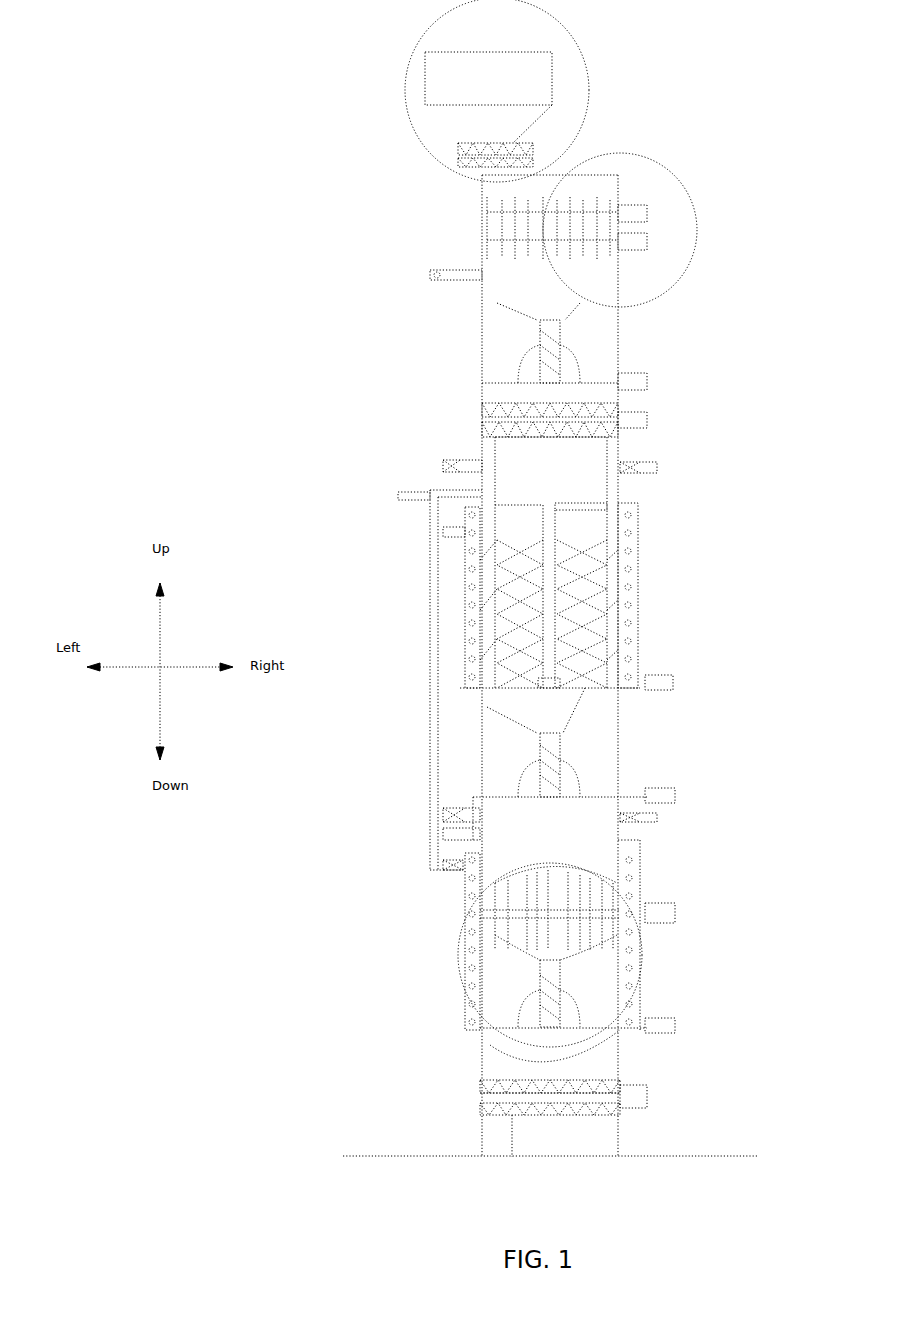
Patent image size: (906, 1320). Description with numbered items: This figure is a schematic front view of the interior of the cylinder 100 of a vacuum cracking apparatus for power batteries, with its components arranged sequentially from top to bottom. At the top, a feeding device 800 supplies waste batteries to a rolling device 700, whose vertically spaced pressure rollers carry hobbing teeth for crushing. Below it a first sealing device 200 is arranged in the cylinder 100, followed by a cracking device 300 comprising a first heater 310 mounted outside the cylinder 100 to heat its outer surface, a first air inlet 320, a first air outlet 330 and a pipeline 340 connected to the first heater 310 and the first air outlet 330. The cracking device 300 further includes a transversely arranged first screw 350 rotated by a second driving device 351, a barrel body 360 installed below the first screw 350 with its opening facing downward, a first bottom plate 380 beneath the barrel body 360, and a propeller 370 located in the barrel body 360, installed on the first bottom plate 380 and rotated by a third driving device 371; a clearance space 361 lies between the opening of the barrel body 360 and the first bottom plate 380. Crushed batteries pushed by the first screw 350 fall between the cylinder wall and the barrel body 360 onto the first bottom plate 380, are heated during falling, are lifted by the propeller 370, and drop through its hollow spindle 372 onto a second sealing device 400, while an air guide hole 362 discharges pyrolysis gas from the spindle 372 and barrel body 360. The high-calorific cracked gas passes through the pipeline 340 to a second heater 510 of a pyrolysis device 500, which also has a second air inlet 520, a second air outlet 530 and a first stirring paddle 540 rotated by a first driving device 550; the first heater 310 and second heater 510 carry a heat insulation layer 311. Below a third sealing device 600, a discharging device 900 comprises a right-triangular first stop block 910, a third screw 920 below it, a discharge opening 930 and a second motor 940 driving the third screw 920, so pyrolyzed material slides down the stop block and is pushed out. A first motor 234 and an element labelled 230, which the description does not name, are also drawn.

The cylinder 100 is at (585, 165).
The first sealing device 200 is at (533, 352).
The bottom plate 230 is at (620, 1010).
The first motor 234 is at (655, 1027).
The cracking device 300 is at (485, 423).
The first heater 310 is at (465, 600).
The heat insulation layer 311 is at (463, 577).
The first air inlet 320 is at (640, 470).
The first air outlet 330 is at (478, 500).
The pipeline 340 is at (493, 680).
The first screw 350 is at (625, 405).
The second driving device 351 is at (640, 426).
The barrel body 360 is at (640, 513).
The clearance space 361 is at (460, 647).
The air guide hole 362 is at (607, 500).
The propeller 370 is at (640, 612).
The third driving device 371 is at (660, 675).
The spindle 372 is at (637, 580).
The first bottom plate 380 is at (583, 690).
The second sealing device 400 is at (500, 745).
The pyrolysis device 500 is at (583, 840).
The second heater 510 is at (473, 857).
The second air inlet 520 is at (657, 817).
The second air outlet 530 is at (467, 810).
The first stirring paddle 540 is at (645, 880).
The first driving device 550 is at (655, 905).
The third sealing device 600 is at (530, 995).
The rolling device 700 is at (660, 185).
The feeding device 800 is at (437, 82).
The discharging device 900 is at (597, 1072).
The first stop block 910 is at (490, 1070).
The third screw 920 is at (480, 1088).
The discharge opening 930 is at (490, 1138).
The second motor 940 is at (637, 1100).